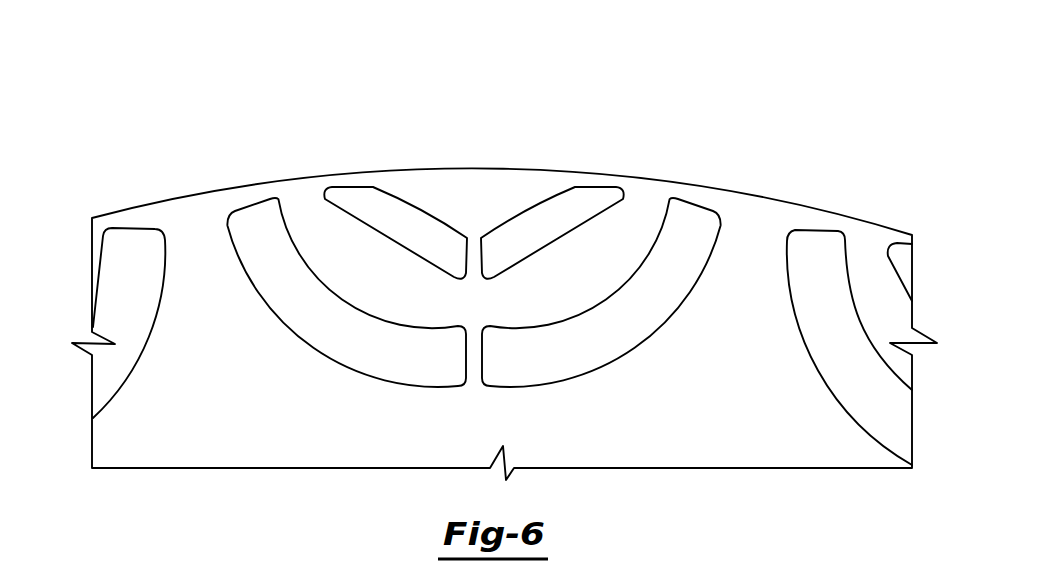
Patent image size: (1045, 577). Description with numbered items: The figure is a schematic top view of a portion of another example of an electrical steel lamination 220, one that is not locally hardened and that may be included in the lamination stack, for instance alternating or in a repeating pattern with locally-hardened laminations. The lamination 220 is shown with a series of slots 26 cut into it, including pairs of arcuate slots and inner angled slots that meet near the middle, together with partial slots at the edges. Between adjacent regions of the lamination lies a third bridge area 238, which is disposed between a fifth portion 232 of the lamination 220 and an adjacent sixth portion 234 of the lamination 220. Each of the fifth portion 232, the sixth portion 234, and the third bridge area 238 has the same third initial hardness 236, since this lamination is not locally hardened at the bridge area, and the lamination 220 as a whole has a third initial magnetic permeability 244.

The slots 26 is at (902, 258).
The electrical steel lamination 220 is at (181, 452).
The fifth portion 232 is at (236, 290).
The sixth portion 234 is at (398, 183).
The third initial hardness 236 is at (479, 234).
The third bridge area 238 is at (236, 200).
The third initial magnetic permeability 244 is at (479, 234).